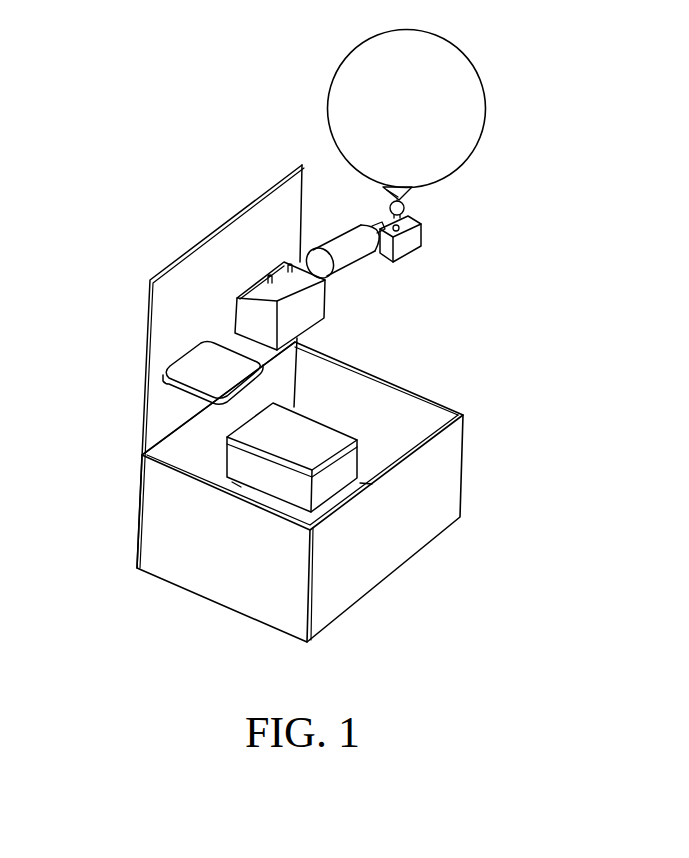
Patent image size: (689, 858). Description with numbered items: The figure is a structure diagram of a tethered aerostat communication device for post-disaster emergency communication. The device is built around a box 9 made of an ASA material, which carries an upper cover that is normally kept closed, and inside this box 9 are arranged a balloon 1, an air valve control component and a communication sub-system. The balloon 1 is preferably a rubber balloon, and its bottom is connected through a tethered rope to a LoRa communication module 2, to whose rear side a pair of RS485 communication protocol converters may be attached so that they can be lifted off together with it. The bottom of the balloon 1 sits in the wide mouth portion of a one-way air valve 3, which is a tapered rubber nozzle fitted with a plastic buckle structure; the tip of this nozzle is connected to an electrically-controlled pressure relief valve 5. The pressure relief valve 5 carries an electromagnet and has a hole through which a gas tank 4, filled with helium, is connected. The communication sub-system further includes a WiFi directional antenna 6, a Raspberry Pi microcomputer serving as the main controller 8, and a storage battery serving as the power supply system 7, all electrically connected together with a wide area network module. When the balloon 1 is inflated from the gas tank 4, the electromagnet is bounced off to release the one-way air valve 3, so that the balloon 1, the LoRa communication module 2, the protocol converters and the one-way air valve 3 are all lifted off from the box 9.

The balloon 1 is at (483, 133).
The LoRa communication module 2 is at (410, 193).
The one-way air valve 3 is at (405, 210).
The gas tank 4 is at (337, 247).
The pressure relief valve 5 is at (405, 252).
The WiFi directional antenna 6 is at (207, 370).
The power supply system 7 is at (300, 320).
The main controller 8 is at (277, 462).
The box 9 is at (180, 520).